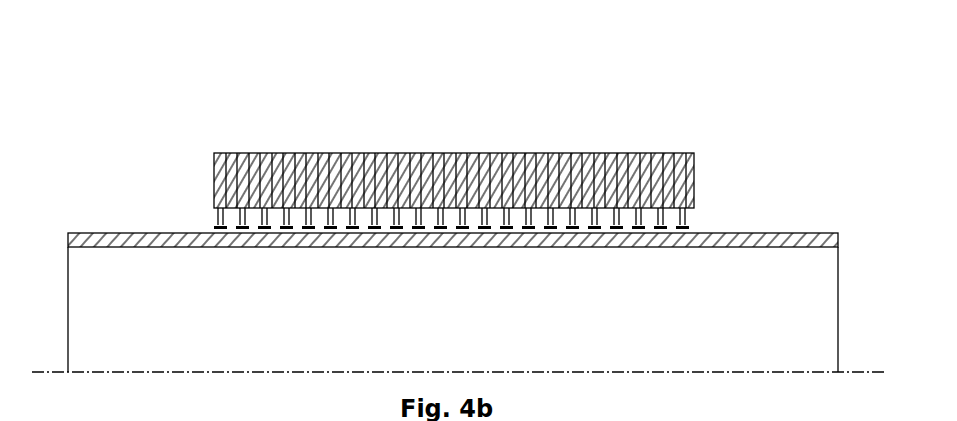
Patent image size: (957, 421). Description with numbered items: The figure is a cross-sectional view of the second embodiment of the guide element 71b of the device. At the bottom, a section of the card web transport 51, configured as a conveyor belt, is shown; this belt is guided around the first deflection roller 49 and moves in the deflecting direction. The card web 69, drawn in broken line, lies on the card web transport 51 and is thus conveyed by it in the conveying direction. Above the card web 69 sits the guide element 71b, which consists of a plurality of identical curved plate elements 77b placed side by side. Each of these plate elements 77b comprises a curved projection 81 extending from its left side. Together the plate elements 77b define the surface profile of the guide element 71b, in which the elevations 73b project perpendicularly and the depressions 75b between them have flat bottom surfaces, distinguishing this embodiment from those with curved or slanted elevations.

The first deflection roller 49 is at (802, 240).
The card web transport 51 is at (732, 233).
The card web 69 is at (226, 213).
The guide element 71b is at (468, 153).
The elevations 73b is at (221, 229).
The depressions 75b is at (286, 229).
The curved plate elements 77b is at (383, 153).
The curved projection 81 is at (676, 228).